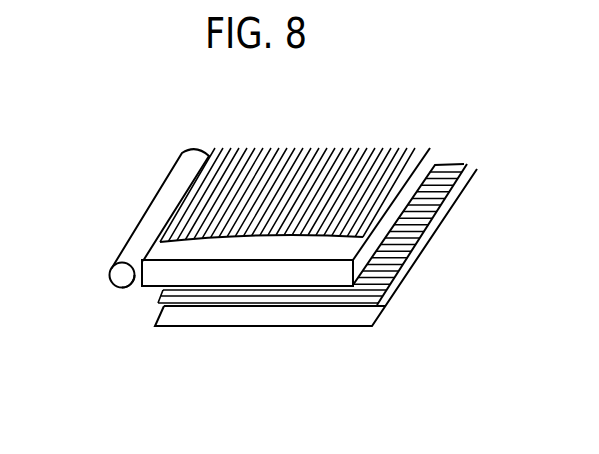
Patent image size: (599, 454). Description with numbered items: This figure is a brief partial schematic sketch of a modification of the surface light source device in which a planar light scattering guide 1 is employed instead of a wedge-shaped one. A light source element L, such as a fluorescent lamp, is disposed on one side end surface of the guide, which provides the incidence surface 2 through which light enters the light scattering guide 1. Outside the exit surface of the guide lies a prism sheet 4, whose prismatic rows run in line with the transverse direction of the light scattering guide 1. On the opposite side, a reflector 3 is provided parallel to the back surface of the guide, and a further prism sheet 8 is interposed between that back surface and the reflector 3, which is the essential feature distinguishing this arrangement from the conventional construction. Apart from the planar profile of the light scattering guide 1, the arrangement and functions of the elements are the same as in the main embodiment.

The light source element L is at (130, 235).
The light scattering guide 1 is at (225, 275).
The incidence surface 2 is at (131, 289).
The reflector 3 is at (363, 316).
The prism sheet 4 is at (352, 157).
The prism sheet 8 is at (430, 209).